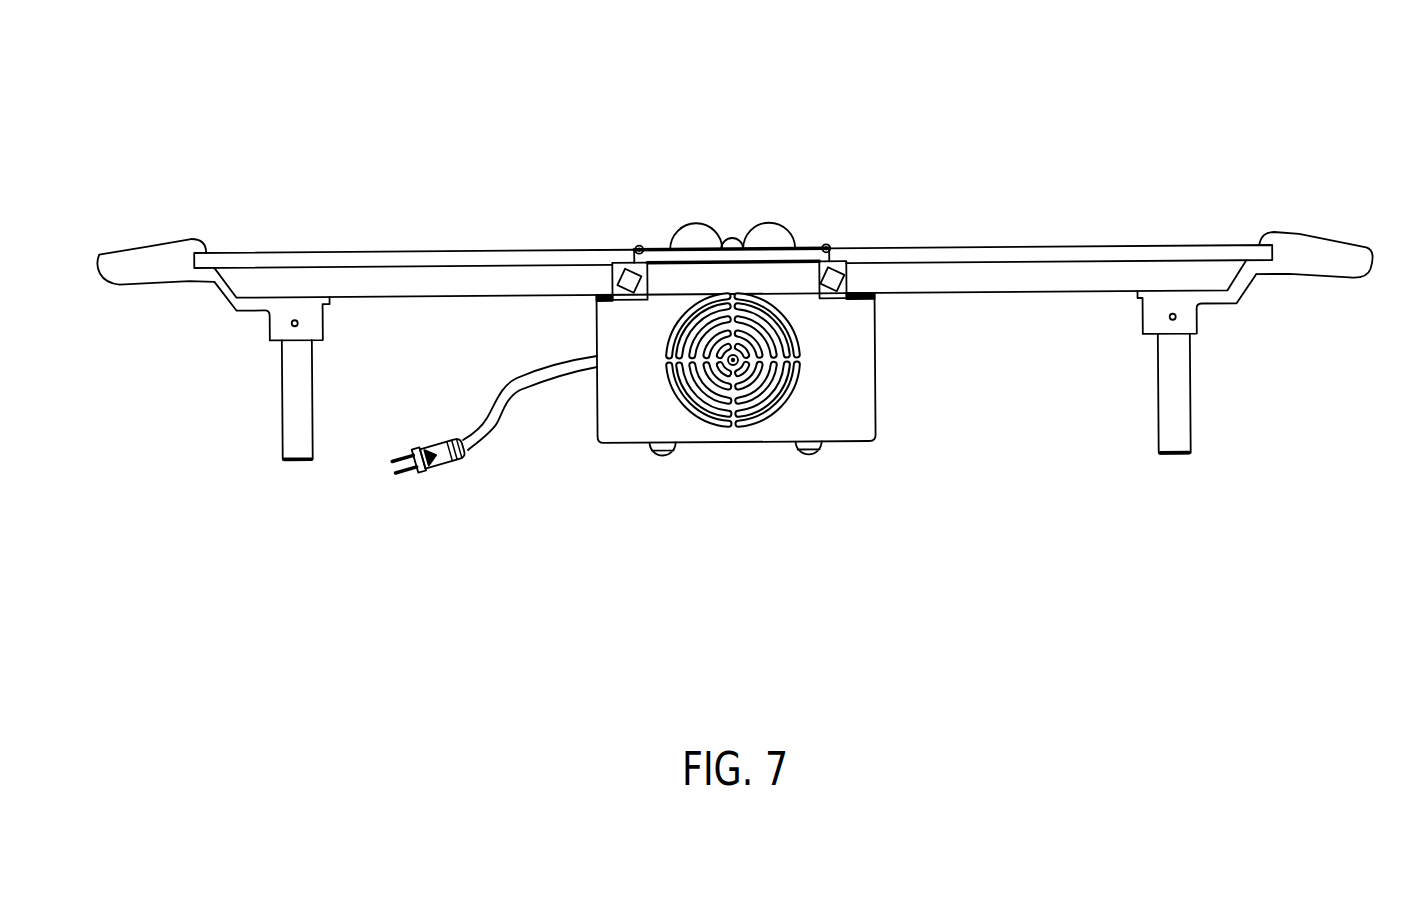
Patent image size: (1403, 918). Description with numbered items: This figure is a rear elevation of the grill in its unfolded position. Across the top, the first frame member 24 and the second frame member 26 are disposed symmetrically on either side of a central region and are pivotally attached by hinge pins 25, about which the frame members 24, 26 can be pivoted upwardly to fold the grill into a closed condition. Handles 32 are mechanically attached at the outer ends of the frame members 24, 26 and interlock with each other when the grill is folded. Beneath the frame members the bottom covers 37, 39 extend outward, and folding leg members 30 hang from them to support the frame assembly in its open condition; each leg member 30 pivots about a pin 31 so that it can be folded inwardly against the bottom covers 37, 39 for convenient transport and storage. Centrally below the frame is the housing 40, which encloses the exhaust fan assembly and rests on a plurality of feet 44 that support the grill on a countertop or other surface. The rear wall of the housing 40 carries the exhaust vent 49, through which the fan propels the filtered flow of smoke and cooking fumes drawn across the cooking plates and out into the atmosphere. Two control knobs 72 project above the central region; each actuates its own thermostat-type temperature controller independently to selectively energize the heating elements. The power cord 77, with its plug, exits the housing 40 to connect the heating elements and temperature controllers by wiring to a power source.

The first frame member 24 is at (330, 262).
The hinge pins 25 is at (639, 245).
The second frame member 26 is at (925, 255).
The folding leg members 30 is at (292, 423).
The pins 31 is at (295, 323).
The handles 32 is at (148, 263).
The bottom cover 37 is at (413, 280).
The bottom cover 39 is at (975, 275).
The housing 40 is at (612, 422).
The feet 44 is at (662, 455).
The exhaust vent 49 is at (720, 402).
The control knobs 72 is at (770, 237).
The power cord 77 is at (418, 478).